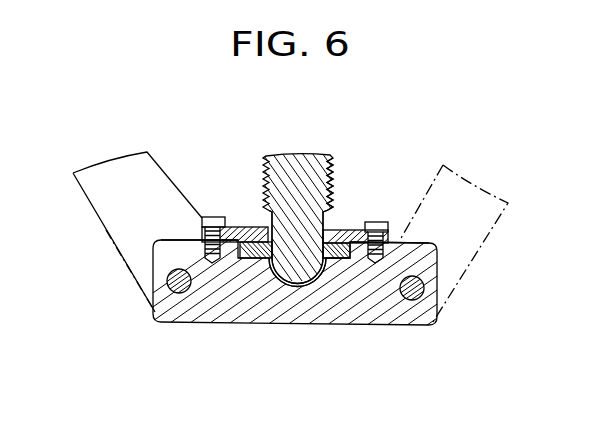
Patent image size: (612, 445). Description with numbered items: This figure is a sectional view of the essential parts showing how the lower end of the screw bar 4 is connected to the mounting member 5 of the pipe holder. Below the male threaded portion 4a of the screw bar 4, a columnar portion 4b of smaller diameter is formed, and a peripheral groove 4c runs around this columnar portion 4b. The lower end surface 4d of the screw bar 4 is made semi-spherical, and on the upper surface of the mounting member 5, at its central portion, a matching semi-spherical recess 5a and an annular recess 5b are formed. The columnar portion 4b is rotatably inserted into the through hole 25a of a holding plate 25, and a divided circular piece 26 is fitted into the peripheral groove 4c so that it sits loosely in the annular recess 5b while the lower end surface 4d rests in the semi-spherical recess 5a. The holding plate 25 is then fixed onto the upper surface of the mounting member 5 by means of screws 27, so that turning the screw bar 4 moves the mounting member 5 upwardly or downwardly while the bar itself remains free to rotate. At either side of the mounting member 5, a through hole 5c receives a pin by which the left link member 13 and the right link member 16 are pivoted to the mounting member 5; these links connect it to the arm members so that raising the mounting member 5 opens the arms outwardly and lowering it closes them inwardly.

The screw bar 4 is at (308, 152).
The male threaded portion 4a is at (330, 160).
The columnar portion 4b is at (325, 230).
The peripheral groove 4c is at (349, 253).
The lower end surface 4d is at (291, 284).
The mounting member 5 is at (216, 322).
The semi-spherical recess 5a is at (278, 284).
The annular recess 5b is at (242, 242).
The through hole 5c is at (168, 286).
The left link member 13 is at (122, 262).
The right link member 16 is at (487, 238).
The holding plate 25 is at (229, 226).
The through hole 25a is at (268, 224).
The divided circular piece 26 is at (330, 262).
The screws 27 is at (202, 222).